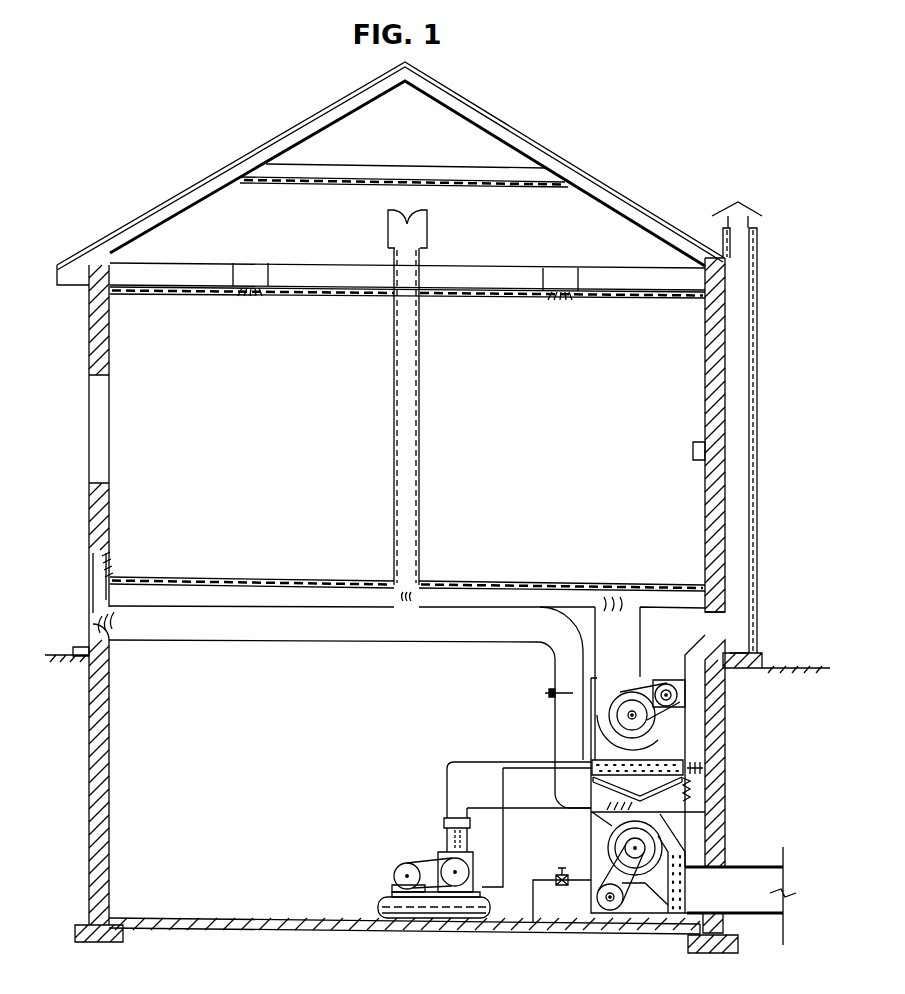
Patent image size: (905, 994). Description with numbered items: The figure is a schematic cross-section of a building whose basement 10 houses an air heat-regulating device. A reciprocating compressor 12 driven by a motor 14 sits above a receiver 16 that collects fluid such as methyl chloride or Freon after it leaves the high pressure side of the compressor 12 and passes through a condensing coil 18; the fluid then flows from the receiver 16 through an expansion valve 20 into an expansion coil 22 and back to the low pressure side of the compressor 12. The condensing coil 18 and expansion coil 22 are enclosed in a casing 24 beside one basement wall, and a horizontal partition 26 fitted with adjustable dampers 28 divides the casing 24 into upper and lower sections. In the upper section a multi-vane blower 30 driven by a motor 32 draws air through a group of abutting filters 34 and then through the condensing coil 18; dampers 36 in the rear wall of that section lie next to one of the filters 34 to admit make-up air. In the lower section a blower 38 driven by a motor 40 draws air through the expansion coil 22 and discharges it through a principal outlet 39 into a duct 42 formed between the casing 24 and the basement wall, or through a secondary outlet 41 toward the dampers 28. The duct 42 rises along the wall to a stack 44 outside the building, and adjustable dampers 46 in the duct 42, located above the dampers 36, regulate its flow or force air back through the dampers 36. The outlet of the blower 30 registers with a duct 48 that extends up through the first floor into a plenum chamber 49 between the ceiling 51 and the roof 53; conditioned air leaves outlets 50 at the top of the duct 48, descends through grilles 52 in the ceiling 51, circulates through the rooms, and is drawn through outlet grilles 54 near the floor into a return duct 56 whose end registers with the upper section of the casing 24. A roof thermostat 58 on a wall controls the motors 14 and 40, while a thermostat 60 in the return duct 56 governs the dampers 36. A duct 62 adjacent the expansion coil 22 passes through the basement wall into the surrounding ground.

The basement 10 is at (103, 801).
The compressor 12 is at (445, 838).
The motor 14 is at (394, 870).
The receiver 16 is at (378, 903).
The condensing coil 18 is at (598, 763).
The expansion valve 20 is at (562, 886).
The expansion coil 22 is at (658, 920).
The casing 24 is at (591, 852).
The partition 26 is at (660, 812).
The adjustable dampers 28 is at (575, 801).
The blower 30 is at (618, 708).
The motor 32 is at (663, 682).
The filters 34 is at (553, 778).
The dampers 36 is at (688, 792).
The blower 38 is at (625, 840).
The principal outlet 39 is at (687, 848).
The motor 40 is at (600, 910).
The secondary outlet 41 is at (608, 822).
The duct 42 is at (695, 710).
The stack 44 is at (745, 518).
The adjustable dampers 46 is at (695, 760).
The duct 48 is at (413, 367).
The plenum chamber 49 is at (404, 203).
The outlets 50 is at (388, 230).
The ceiling 51 is at (472, 297).
The grilles 52 is at (240, 297).
The roof 53 is at (568, 160).
The outlet grilles 54 is at (112, 558).
The return duct 56 is at (312, 633).
The roof thermostat 58 is at (693, 447).
The thermostat 60 is at (545, 692).
The duct 62 is at (740, 896).